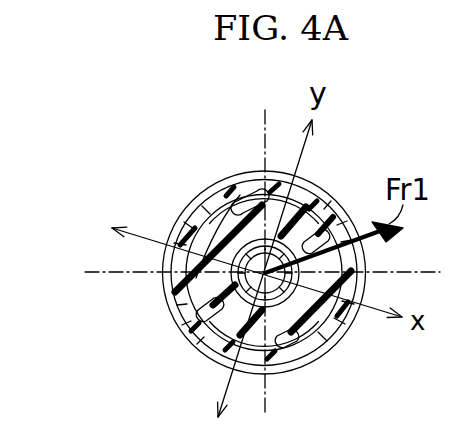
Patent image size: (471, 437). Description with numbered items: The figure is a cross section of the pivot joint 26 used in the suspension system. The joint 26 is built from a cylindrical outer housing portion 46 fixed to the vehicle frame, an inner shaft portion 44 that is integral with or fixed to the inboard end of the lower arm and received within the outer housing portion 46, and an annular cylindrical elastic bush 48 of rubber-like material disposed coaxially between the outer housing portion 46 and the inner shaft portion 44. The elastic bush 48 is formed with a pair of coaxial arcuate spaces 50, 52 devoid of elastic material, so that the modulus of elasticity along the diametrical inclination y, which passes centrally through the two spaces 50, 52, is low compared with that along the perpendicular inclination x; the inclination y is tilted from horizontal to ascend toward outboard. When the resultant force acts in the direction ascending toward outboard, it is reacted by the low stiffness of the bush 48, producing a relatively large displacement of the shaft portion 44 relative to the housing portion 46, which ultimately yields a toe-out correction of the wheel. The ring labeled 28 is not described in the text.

The joint 26 is at (233, 165).
The inner ring 28 is at (340, 325).
The inner shaft portion 44 is at (182, 230).
The cylindrical outer housing portion 46 is at (195, 340).
The annular cylindrical elastic bush 48 is at (187, 302).
The arcuate space 50 is at (330, 220).
The arcuate space 52 is at (285, 345).